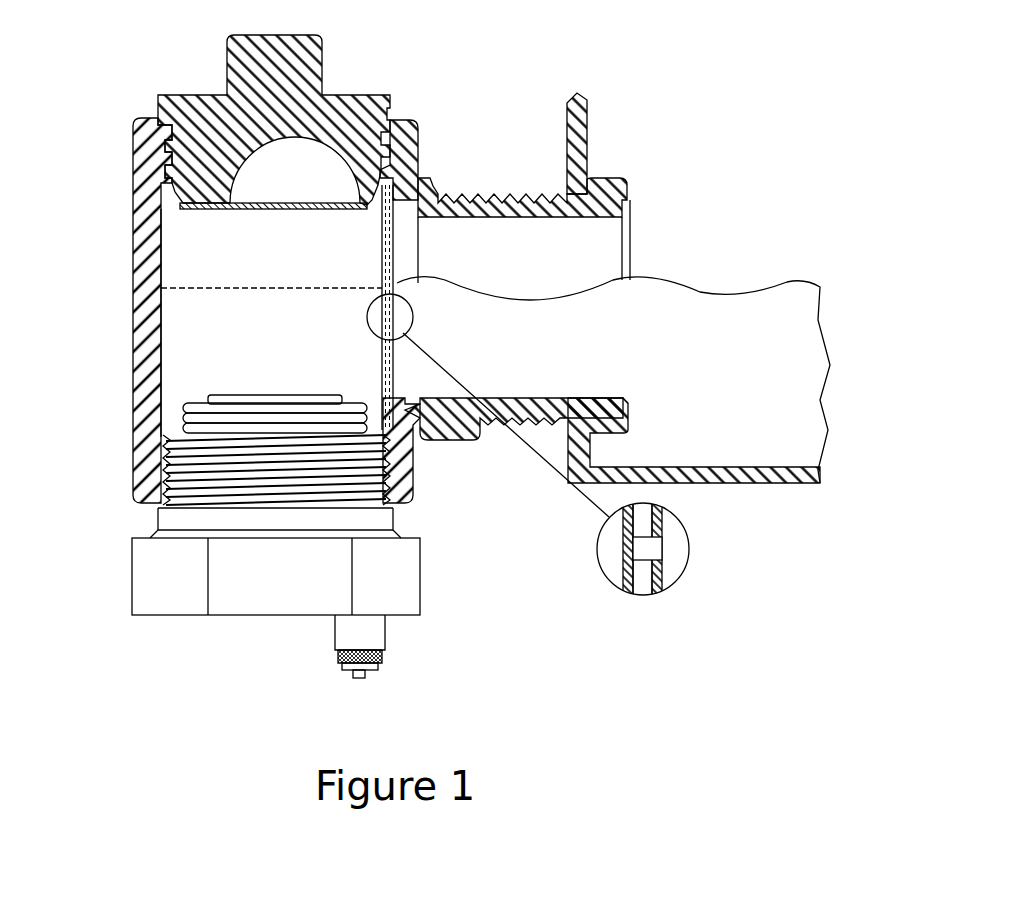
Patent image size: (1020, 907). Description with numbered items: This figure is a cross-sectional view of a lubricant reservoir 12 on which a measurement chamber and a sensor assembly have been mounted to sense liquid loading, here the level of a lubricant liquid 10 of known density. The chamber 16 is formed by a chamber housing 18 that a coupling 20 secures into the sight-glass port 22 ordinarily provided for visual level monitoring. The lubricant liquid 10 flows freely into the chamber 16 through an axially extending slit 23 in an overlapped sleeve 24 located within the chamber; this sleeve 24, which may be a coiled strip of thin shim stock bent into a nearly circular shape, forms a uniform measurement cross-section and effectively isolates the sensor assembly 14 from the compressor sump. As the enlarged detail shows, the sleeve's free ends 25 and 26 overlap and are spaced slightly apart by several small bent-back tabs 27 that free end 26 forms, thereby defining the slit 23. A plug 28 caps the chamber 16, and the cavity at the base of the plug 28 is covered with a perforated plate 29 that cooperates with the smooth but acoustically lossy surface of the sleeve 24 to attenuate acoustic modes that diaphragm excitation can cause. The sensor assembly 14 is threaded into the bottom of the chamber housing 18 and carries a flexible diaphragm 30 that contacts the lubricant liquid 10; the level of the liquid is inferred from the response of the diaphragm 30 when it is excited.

The lubricant liquid 10 is at (732, 397).
The lubricant reservoir 12 is at (742, 218).
The sensor assembly 14 is at (421, 596).
The chamber 16 is at (297, 265).
The chamber housing 18 is at (410, 443).
The coupling 20 is at (522, 194).
The sight-glass port 22 is at (570, 198).
The axially extending slit 23 is at (643, 587).
The overlapped sleeve 24 is at (133, 334).
The free end 25 is at (630, 575).
The free end 26 is at (660, 583).
The bent-back tabs 27 is at (655, 547).
The plug 28 is at (338, 130).
The perforated plate 29 is at (255, 205).
The diaphragm 30 is at (183, 407).